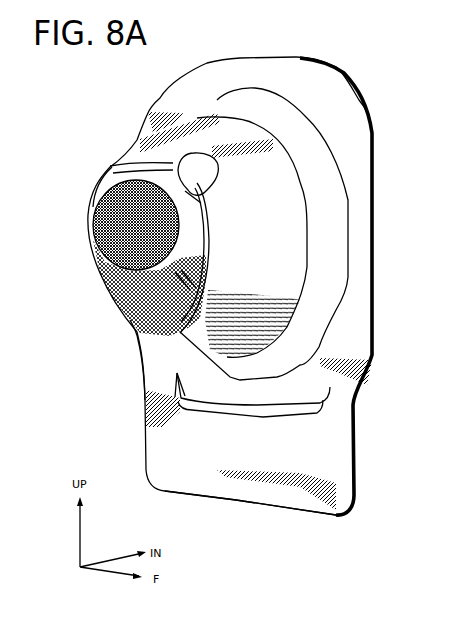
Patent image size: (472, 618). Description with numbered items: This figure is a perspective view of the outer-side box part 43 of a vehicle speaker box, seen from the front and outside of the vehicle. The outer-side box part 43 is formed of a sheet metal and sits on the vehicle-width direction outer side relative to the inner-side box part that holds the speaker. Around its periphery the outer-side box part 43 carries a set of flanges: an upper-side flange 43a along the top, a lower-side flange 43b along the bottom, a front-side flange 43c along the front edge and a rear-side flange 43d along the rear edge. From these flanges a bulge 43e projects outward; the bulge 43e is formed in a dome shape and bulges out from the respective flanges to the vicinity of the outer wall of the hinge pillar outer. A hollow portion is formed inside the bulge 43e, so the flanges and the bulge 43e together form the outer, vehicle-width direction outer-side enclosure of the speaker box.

The outer-side box part 43 is at (377, 105).
The upper-side flange 43a is at (261, 72).
The lower-side flange 43b is at (228, 490).
The front-side flange 43c is at (363, 244).
The rear-side flange 43d is at (146, 339).
The bulge 43e is at (96, 198).